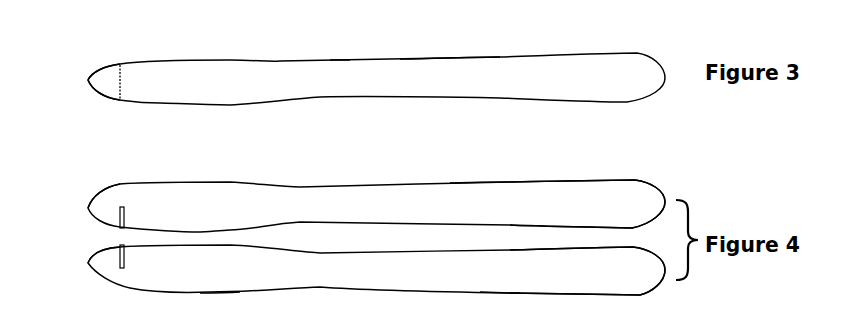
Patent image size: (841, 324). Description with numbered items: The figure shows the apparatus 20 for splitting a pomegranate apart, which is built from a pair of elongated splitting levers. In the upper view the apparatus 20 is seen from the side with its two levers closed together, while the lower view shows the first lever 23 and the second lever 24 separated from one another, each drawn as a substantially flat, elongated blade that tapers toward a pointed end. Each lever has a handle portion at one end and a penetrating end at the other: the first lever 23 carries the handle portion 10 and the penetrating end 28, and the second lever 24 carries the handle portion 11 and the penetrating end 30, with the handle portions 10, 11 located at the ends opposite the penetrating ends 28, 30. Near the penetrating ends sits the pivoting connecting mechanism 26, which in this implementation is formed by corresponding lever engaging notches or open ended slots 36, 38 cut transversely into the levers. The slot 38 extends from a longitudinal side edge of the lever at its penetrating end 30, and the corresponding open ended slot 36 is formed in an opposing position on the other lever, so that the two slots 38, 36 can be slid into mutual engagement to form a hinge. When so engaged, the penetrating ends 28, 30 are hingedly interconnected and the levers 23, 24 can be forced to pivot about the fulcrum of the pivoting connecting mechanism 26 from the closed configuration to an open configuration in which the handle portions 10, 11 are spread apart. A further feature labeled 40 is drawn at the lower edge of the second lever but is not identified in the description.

In FIG. 4, the handle portion 10 is at (600, 217).
In FIG. 4, the handle portion 11 is at (608, 281).
In FIG. 3, the apparatus 20 is at (292, 49).
In FIG. 4, the apparatus 20 is at (372, 178).
In FIG. 3, the first elongated splitting lever 23 is at (482, 68).
In FIG. 4, the first elongated splitting lever 23 is at (521, 198).
In FIG. 3, the second elongated splitting lever 24 is at (343, 30).
In FIG. 4, the second elongated splitting lever 24 is at (516, 282).
In FIG. 3, the pivoting connecting mechanism 26 is at (126, 78).
In FIG. 3, the penetrating end 28 is at (92, 79).
In FIG. 4, the penetrating end 28 is at (88, 206).
In FIG. 4, the penetrating end 30 is at (88, 264).
In FIG. 3, the open ended slot 36 is at (115, 99).
In FIG. 4, the open ended slot 36 is at (118, 223).
In FIG. 4, the open ended slot 38 is at (118, 261).
In FIG. 4, the edge 40 is at (225, 308).